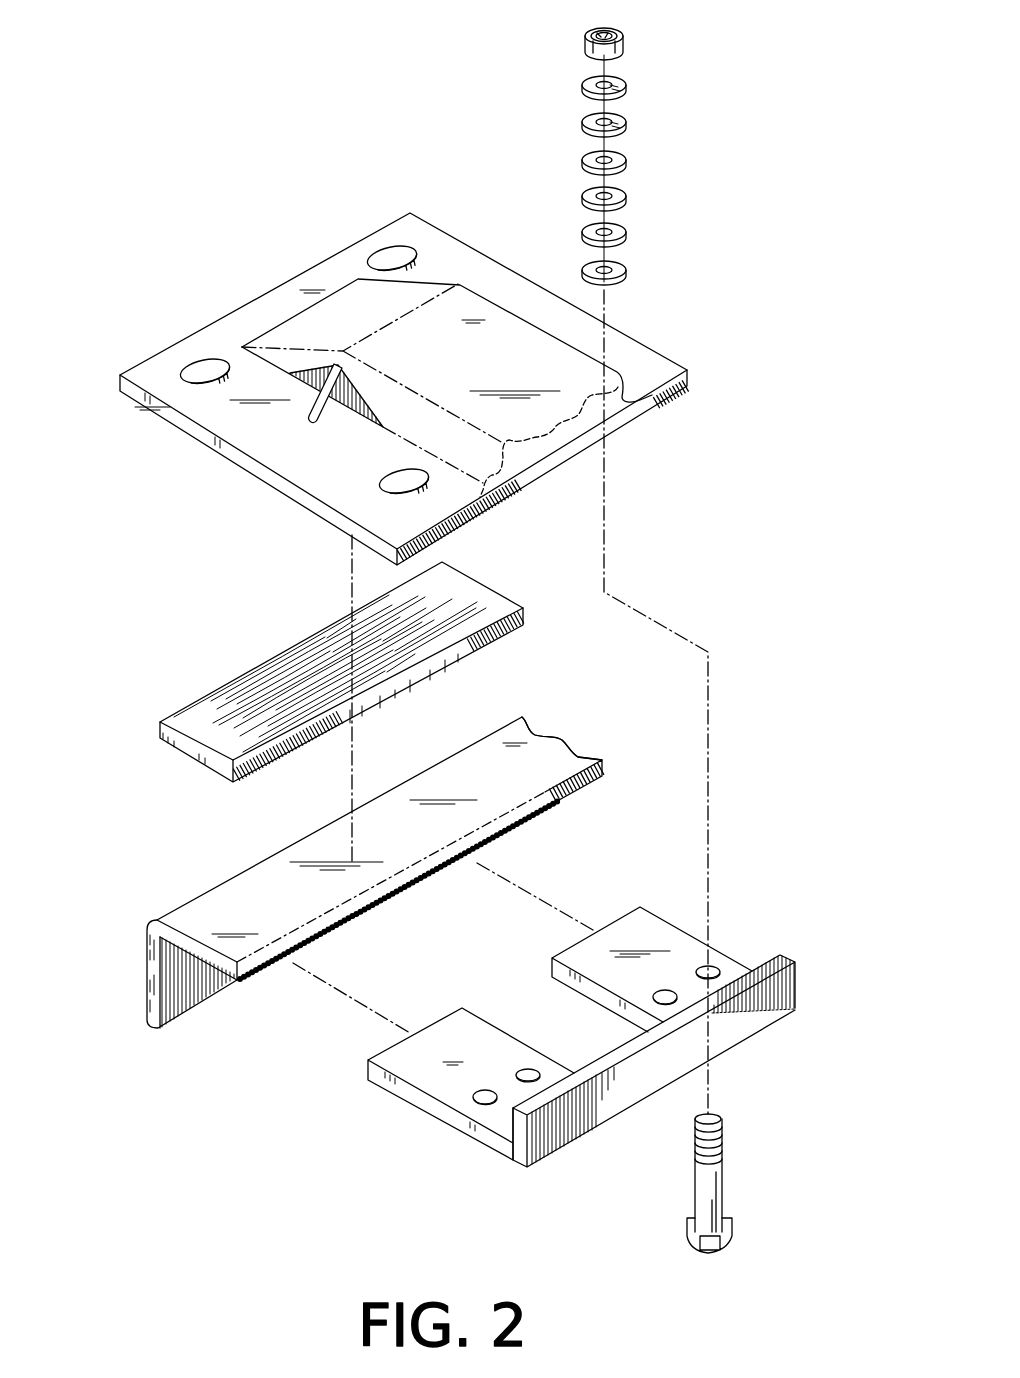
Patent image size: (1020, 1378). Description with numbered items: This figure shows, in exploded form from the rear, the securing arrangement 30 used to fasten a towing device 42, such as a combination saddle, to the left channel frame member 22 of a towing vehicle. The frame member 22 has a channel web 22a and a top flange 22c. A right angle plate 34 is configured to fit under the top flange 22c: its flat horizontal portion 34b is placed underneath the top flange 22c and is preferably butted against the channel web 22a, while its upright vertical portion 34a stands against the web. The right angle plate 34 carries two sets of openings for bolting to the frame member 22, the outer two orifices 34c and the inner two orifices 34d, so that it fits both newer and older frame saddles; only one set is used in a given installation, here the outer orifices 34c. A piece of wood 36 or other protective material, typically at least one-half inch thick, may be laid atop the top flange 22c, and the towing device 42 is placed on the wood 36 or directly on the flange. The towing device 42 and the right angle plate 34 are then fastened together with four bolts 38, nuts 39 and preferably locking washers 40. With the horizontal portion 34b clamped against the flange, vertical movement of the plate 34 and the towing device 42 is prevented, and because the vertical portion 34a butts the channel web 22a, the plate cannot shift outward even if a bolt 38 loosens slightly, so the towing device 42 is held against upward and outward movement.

The mounting assembly 30 is at (742, 590).
The left channel frame member 22 is at (373, 893).
The channel web 22a is at (147, 1000).
The top flange 22c is at (574, 792).
The right angle plate 34 is at (571, 1040).
The upright vertical portion 34a is at (762, 968).
The horizontal portion 34b is at (443, 1075).
The outer orifices 34c is at (475, 1085).
The inner orifices 34d is at (531, 1070).
The piece of wood 36 is at (232, 688).
The bolt 38 is at (722, 1163).
The nut 39 is at (623, 42).
The locking washers 40 is at (628, 277).
The towing device 42 is at (267, 303).